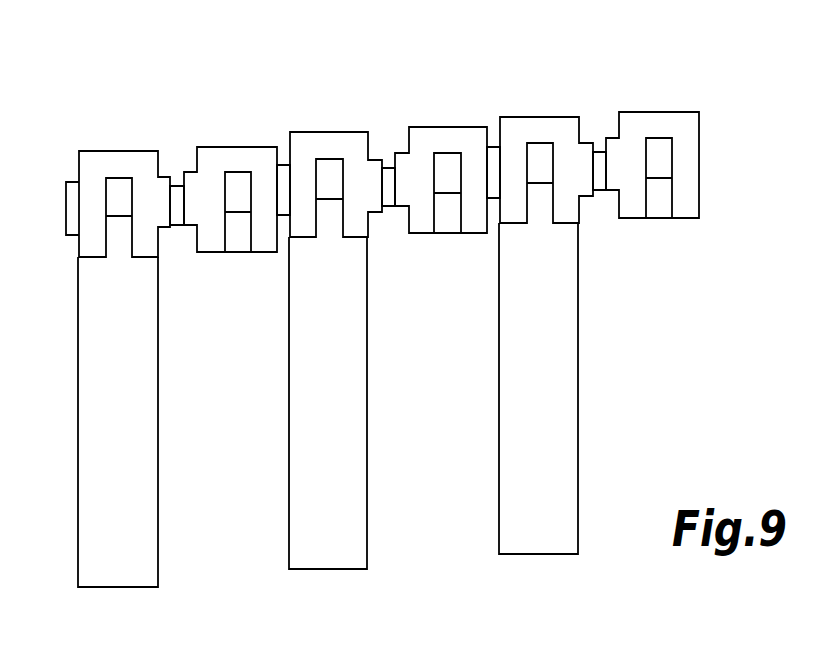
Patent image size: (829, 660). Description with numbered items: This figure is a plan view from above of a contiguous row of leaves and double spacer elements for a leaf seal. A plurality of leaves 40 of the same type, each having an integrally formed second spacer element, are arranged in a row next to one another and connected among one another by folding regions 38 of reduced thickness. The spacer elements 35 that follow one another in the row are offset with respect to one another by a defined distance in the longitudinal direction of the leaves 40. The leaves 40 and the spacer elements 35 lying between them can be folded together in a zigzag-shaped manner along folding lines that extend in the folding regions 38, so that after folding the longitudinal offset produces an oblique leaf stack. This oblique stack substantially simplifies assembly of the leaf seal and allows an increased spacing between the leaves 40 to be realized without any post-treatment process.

The spacer element 35 is at (103, 162).
The folding region 38 is at (178, 193).
The leaf 40 is at (123, 427).